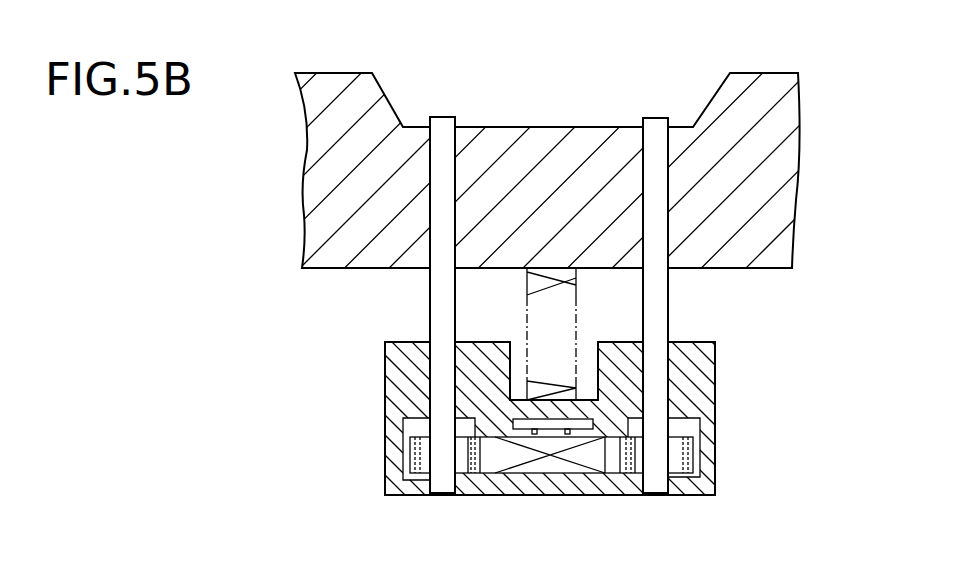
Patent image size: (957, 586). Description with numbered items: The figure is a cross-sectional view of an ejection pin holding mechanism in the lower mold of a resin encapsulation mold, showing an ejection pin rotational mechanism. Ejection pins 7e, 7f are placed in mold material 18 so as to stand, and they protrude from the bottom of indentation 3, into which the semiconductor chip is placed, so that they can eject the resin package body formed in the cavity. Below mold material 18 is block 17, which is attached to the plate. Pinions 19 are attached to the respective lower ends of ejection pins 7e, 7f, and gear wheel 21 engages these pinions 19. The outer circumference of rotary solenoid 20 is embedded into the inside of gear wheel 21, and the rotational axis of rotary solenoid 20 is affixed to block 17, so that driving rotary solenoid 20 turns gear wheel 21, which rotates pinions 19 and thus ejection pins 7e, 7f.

The indentation 3 is at (537, 113).
The ejection pin 7e is at (430, 304).
The ejection pin 7f is at (655, 197).
The block 17 is at (697, 372).
The mold material 18 is at (778, 115).
The pinion 19 is at (432, 458).
The rotary solenoid 20 is at (565, 470).
The gear wheel 21 is at (490, 472).